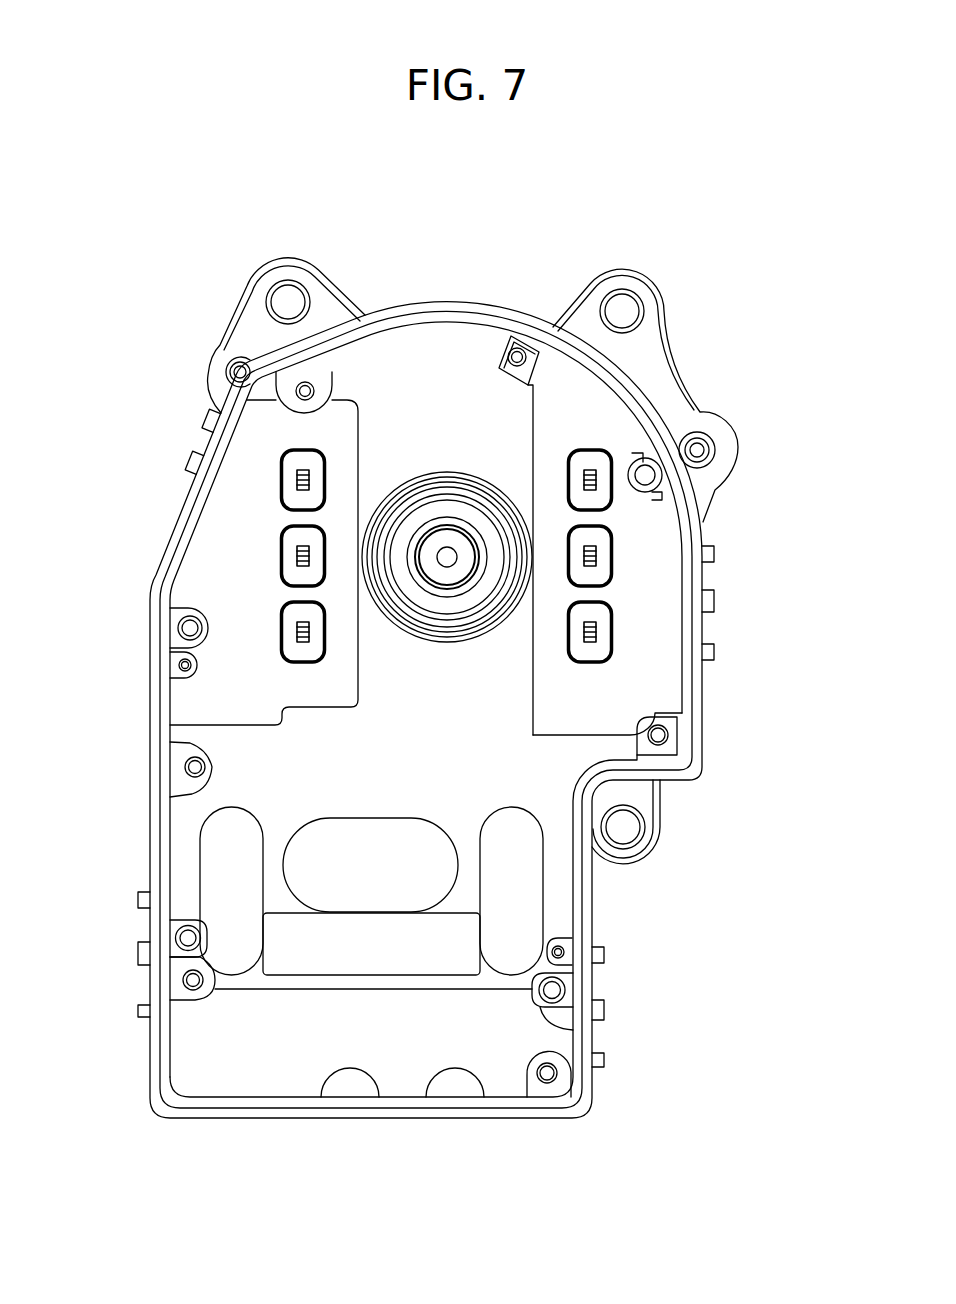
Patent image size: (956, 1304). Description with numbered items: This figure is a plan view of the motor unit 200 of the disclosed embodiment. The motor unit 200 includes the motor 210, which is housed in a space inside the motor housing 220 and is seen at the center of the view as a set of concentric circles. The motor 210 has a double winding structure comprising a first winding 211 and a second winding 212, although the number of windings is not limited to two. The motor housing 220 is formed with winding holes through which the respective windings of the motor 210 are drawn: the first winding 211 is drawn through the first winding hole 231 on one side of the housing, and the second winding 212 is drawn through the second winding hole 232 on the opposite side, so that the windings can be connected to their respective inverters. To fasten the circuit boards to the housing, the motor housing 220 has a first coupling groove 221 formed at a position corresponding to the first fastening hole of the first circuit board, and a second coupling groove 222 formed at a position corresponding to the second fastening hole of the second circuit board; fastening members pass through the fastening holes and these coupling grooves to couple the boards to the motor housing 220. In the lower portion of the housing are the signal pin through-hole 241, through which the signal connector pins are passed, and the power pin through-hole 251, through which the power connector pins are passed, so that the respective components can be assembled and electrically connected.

The motor unit 200 is at (72, 213).
The motor 210 is at (455, 548).
The first winding 211 is at (297, 474).
The second winding 212 is at (697, 432).
The motor housing 220 is at (660, 628).
The first coupling groove 221 is at (655, 475).
The second coupling groove 222 is at (517, 348).
The first winding hole 231 is at (292, 492).
The second winding hole 232 is at (603, 497).
The signal pin through-hole 241 is at (218, 866).
The power pin through-hole 251 is at (437, 1083).